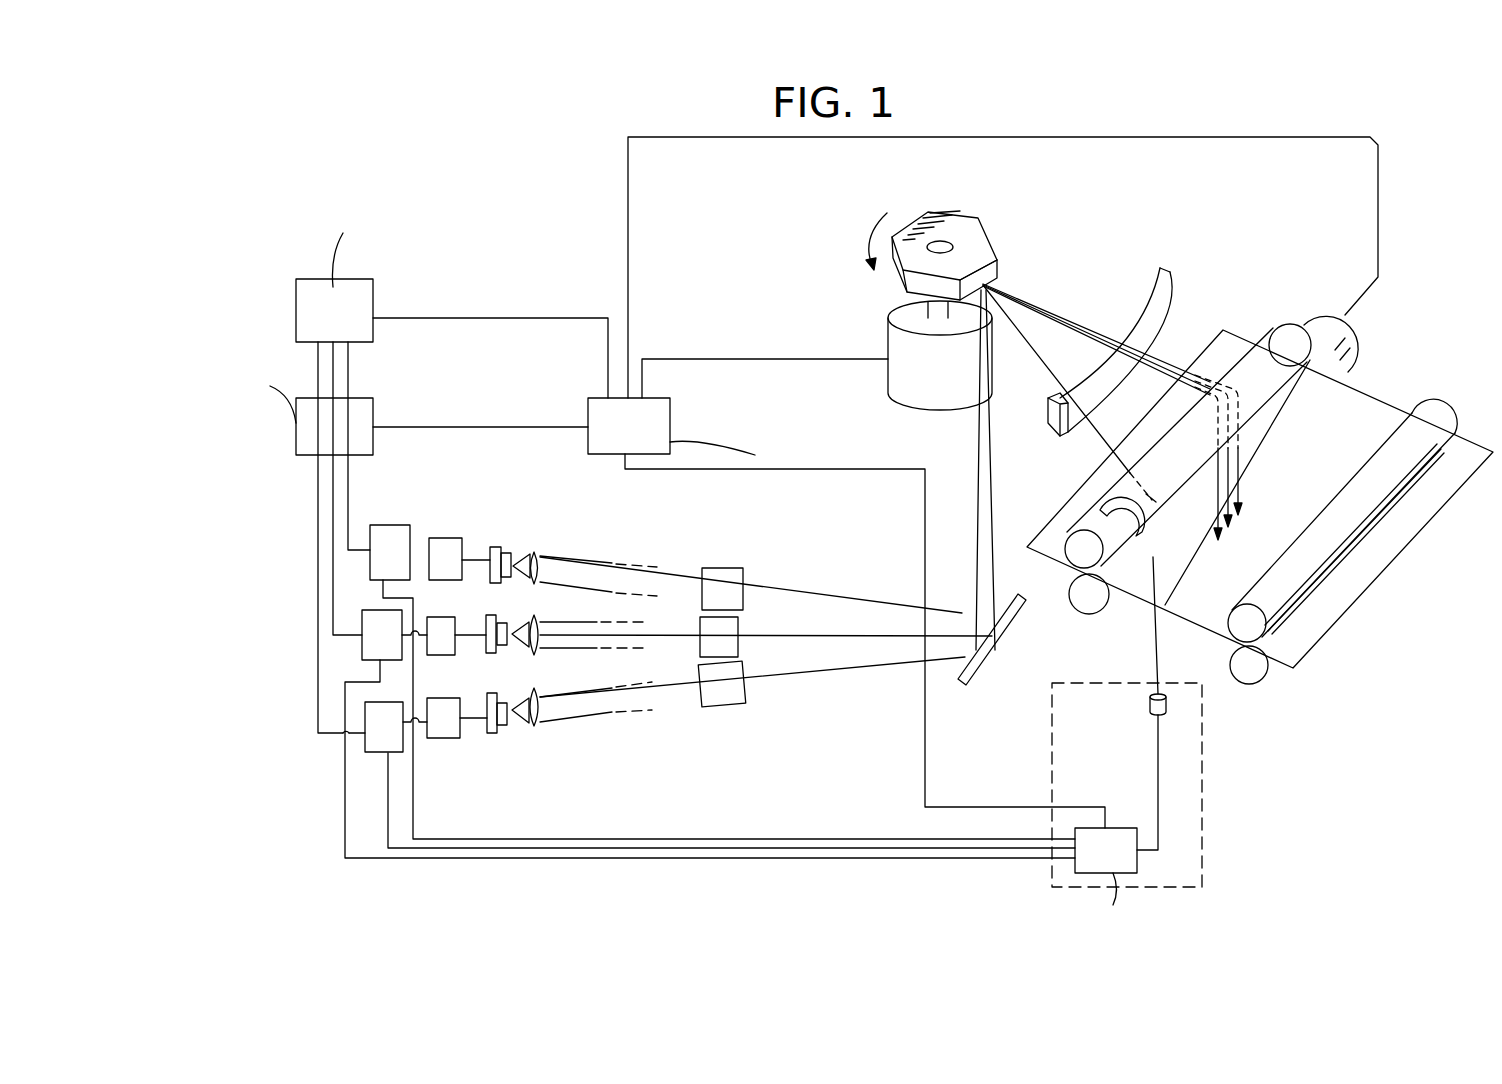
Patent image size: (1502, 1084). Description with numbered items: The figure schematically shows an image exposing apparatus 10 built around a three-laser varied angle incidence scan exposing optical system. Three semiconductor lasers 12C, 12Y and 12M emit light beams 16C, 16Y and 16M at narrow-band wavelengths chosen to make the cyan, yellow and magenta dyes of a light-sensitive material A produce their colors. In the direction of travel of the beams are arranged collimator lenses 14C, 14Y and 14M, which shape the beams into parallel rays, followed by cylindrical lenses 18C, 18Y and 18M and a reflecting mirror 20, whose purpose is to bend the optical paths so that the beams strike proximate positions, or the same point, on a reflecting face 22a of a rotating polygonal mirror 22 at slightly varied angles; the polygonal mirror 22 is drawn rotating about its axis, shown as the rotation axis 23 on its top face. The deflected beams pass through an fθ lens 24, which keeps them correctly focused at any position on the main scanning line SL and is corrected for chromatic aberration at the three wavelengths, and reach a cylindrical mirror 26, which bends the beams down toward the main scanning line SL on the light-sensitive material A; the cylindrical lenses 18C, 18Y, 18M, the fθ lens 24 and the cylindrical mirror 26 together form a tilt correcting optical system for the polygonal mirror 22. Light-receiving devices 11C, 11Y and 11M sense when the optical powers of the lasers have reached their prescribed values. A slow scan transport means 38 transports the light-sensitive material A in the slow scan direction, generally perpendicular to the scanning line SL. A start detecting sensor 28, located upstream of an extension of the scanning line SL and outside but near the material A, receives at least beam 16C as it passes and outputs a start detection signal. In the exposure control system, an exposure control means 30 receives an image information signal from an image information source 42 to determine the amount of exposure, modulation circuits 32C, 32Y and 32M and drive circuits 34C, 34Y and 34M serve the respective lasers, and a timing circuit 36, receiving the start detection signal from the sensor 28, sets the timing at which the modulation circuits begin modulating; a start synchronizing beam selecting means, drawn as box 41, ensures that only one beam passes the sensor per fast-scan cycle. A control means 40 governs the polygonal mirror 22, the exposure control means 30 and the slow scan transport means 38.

The image exposing apparatus 10 is at (570, 226).
The light-receiving device 11M is at (508, 582).
The light-receiving device 11Y is at (500, 622).
The light-receiving device 11C is at (500, 700).
The semiconductor laser 12M is at (494, 547).
The semiconductor laser 12Y is at (490, 654).
The semiconductor laser 12C is at (492, 735).
The collimator lens 14M is at (536, 552).
The collimator lens 14Y is at (540, 641).
The collimator lens 14C is at (530, 727).
The light beam 16M is at (580, 556).
The light beam 16Y is at (597, 620).
The light beam 16C is at (560, 722).
The cylindrical lens 18M is at (718, 568).
The cylindrical lens 18Y is at (740, 637).
The cylindrical lens 18C is at (740, 706).
The reflecting mirror 20 is at (990, 662).
The polygonal mirror 22 is at (960, 220).
The reflecting face 22a is at (1000, 275).
The rotation axis of polygon mirror 23 is at (955, 244).
The fθ lens 24 is at (1165, 270).
The cylindrical mirror 26 is at (1291, 322).
The start detecting sensor 28 is at (1148, 706).
The exposure control means 30 is at (373, 410).
The modulation circuit 32M is at (383, 525).
The modulation circuit 32Y is at (362, 650).
The modulation circuit 32C is at (363, 737).
The drive circuit 34M is at (442, 538).
The drive circuit 34Y is at (433, 613).
The drive circuit 34C is at (443, 740).
The timing circuit 36 is at (1122, 828).
The slow scan transport means 38 is at (1085, 612).
The control means 40 is at (670, 422).
The start synchronizing beam selecting means 41 is at (1205, 835).
The image information source 42 is at (373, 290).
The main scanning line SL is at (1352, 420).
The light-sensitive material A is at (1335, 600).